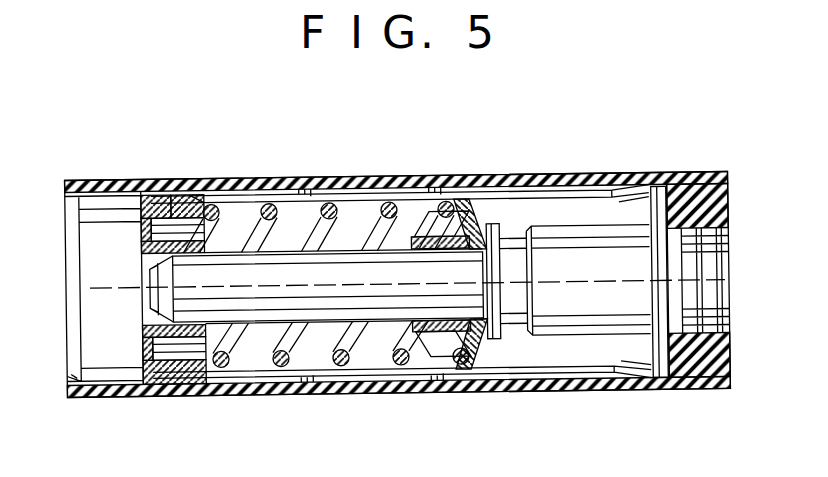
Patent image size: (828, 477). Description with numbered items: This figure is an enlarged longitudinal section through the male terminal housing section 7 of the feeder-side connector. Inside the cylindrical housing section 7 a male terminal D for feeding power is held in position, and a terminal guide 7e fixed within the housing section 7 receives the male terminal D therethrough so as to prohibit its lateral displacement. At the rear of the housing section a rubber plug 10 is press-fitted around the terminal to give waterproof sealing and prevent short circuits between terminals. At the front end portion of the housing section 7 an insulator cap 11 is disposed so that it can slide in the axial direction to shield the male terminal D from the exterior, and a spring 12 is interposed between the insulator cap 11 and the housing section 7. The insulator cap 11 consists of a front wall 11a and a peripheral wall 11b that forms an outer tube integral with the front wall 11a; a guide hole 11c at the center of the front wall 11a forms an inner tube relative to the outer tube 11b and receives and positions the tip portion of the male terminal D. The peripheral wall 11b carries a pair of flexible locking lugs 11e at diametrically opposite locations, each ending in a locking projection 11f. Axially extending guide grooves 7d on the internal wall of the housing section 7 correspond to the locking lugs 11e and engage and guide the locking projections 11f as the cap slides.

The male terminal housing section 7 is at (250, 176).
The guide groove 7d is at (308, 192).
The terminal guide 7e is at (437, 325).
The rubber plug 10 is at (681, 195).
The insulator cap 11 is at (118, 231).
The front wall 11a is at (143, 212).
The peripheral wall 11b is at (168, 378).
The guide hole 11c is at (146, 318).
The flexible locking lug 11e is at (153, 197).
The locking projection 11f is at (197, 195).
The spring 12 is at (284, 366).
The male terminal D is at (570, 236).